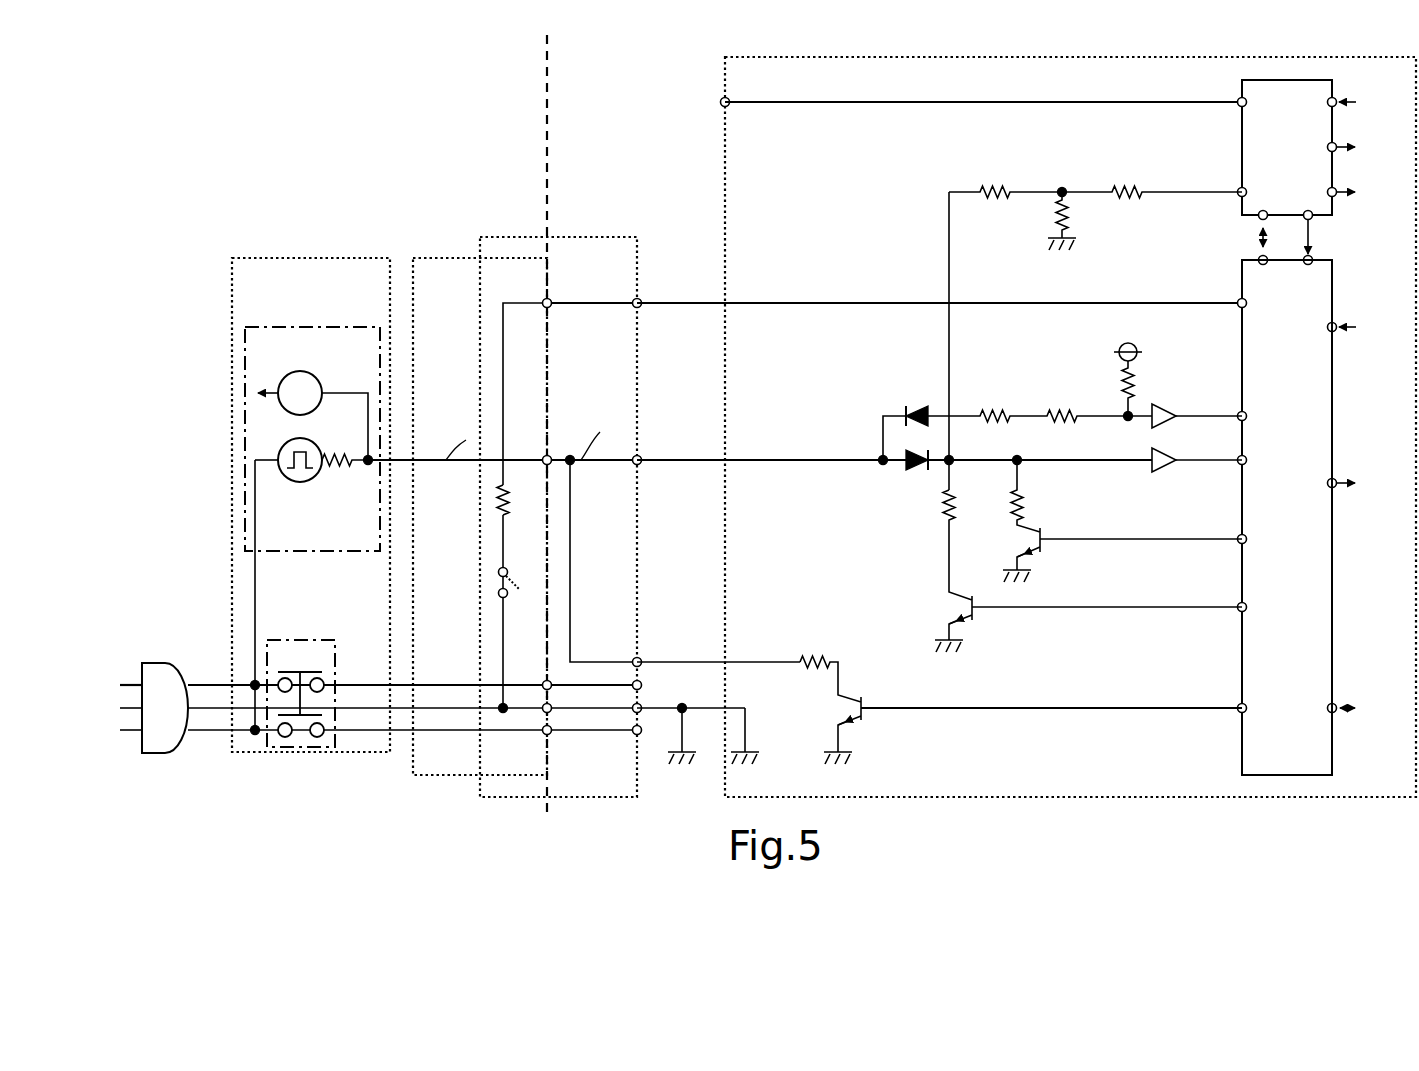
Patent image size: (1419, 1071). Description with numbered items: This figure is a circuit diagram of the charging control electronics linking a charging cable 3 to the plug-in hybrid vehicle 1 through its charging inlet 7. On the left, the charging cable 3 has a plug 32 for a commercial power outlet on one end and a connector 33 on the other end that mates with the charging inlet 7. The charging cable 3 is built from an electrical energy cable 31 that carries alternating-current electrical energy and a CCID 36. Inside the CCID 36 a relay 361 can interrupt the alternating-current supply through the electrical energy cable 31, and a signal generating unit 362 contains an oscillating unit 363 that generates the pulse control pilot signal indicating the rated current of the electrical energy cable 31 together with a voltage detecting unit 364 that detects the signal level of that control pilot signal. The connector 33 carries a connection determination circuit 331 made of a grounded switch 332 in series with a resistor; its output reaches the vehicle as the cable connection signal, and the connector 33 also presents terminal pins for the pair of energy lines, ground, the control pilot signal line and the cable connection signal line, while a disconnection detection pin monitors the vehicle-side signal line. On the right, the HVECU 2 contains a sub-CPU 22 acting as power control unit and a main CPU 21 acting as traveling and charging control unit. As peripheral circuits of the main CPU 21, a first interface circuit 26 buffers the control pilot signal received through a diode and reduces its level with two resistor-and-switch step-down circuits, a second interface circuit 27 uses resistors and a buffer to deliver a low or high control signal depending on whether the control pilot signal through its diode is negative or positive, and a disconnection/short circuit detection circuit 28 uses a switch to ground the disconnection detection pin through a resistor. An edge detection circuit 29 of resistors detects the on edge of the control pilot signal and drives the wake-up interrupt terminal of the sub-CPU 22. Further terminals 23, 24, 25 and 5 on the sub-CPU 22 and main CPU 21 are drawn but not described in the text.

The plug-in hybrid vehicle 1 is at (600, 190).
The HVECU 2 is at (725, 156).
The charging cable 3 is at (485, 190).
The external device connection 5 is at (1350, 708).
The charging inlet 7 is at (622, 236).
The main CPU 21 is at (1242, 752).
The sub-CPU 22 is at (1242, 158).
The power supply input 23 is at (1354, 102).
The input terminal 24 is at (1354, 327).
The output terminal 25 is at (1354, 337).
The first interface circuit 26 is at (1010, 627).
The second interface circuit 27 is at (1036, 398).
The disconnection/short circuit detection circuit 28 is at (855, 668).
The edge detection circuit 29 is at (1050, 180).
The electrical energy cable 31 is at (412, 748).
The plug 32 is at (170, 674).
The connector 33 is at (438, 258).
The CCID 36 is at (279, 258).
The connection determination circuit 331 is at (493, 571).
The switch 332 is at (498, 598).
The relay 361 is at (311, 640).
The signal generating unit 362 is at (330, 327).
The oscillating unit 363 is at (318, 486).
The voltage detecting unit 364 is at (318, 383).